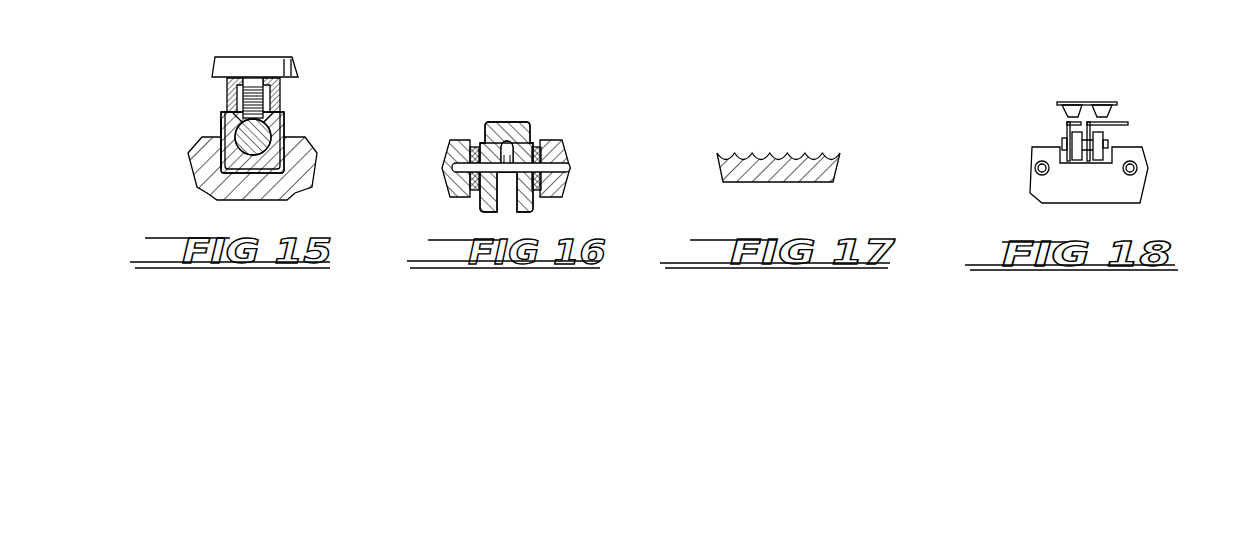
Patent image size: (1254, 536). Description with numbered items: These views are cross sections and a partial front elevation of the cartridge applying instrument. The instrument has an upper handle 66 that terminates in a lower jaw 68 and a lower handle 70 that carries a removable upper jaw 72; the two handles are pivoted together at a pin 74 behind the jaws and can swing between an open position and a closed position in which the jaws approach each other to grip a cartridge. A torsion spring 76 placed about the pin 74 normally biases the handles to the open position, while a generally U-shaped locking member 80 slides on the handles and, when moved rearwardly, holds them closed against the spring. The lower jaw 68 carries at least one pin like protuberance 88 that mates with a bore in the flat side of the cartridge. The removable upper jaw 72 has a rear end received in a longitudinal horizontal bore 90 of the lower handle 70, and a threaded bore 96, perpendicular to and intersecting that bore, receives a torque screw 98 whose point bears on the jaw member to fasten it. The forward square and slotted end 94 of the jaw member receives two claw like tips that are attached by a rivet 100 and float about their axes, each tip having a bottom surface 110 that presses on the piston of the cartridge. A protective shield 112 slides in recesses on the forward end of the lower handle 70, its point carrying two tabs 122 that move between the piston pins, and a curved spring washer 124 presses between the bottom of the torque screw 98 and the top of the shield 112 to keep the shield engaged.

In FIG. 16, the upper handle 66 is at (450, 140).
In FIG. 17, the upper handle 66 is at (805, 160).
In FIG. 15, the lower jaw 68 is at (312, 182).
In FIG. 18, the lower jaw 68 is at (1133, 203).
In FIG. 16, the lower handle 70 is at (507, 125).
In FIG. 15, the removable upper jaw 72 is at (283, 127).
In FIG. 16, the pin 74 is at (572, 168).
In FIG. 16, the torsion spring 76 is at (532, 143).
In FIG. 16, the locking member 80 is at (543, 150).
In FIG. 15, the pin like protuberance 88 is at (206, 3).
In FIG. 18, the pin like protuberance 88 is at (1134, 170).
In FIG. 15, the bore 90 is at (272, 135).
In FIG. 18, the square and slotted end 94 is at (1098, 164).
In FIG. 15, the threaded bore 96 is at (230, 128).
In FIG. 15, the torque screw 98 is at (270, 62).
In FIG. 15, the rivet 100 is at (283, 10).
In FIG. 18, the rivet 100 is at (1062, 141).
In FIG. 18, the bottom surface 110 is at (1128, 125).
In FIG. 15, the protective shield 112 is at (282, 100).
In FIG. 18, the protective shield 112 is at (1092, 103).
In FIG. 18, the tabs 122 is at (1108, 115).
In FIG. 15, the curved spring washer 124 is at (282, 80).